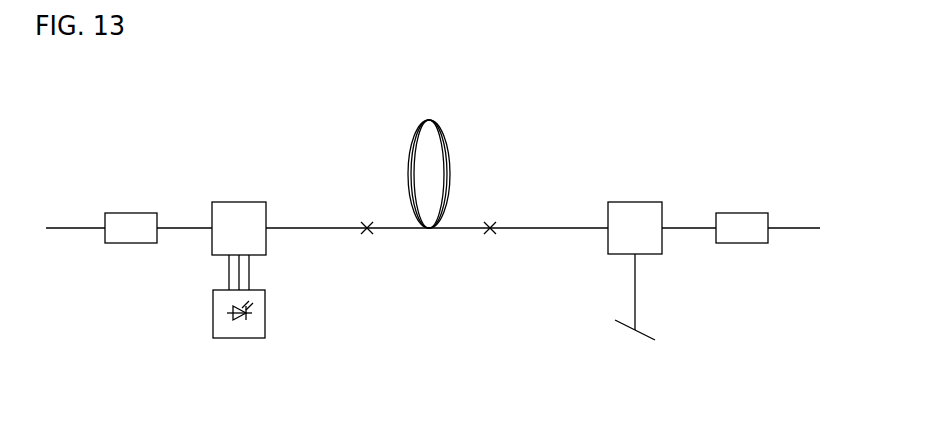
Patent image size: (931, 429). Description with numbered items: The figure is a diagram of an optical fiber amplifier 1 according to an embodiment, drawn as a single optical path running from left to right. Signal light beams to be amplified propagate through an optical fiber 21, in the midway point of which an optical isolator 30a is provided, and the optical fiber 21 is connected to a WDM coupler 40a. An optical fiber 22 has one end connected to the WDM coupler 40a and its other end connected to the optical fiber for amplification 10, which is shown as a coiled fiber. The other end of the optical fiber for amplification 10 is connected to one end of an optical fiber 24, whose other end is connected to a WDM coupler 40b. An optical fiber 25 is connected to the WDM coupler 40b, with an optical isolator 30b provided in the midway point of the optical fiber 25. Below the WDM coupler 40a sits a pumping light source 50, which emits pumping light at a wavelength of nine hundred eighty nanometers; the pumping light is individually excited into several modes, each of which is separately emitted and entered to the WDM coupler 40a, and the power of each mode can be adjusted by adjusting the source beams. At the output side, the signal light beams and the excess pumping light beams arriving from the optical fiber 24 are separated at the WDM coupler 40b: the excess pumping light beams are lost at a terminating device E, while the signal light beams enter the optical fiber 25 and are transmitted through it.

The optical fiber amplifier 1 is at (602, 87).
The optical fiber 21 is at (67, 228).
The optical isolator 30a is at (132, 220).
The WDM coupler 40a is at (235, 208).
The optical fiber 22 is at (313, 228).
The optical fiber for amplification 10 is at (462, 228).
The optical fiber 24 is at (553, 228).
The WDM coupler 40b is at (638, 210).
The optical isolator 30b is at (755, 220).
The optical fiber 25 is at (803, 228).
The pumping light source 50 is at (262, 332).
The terminating device E is at (645, 332).